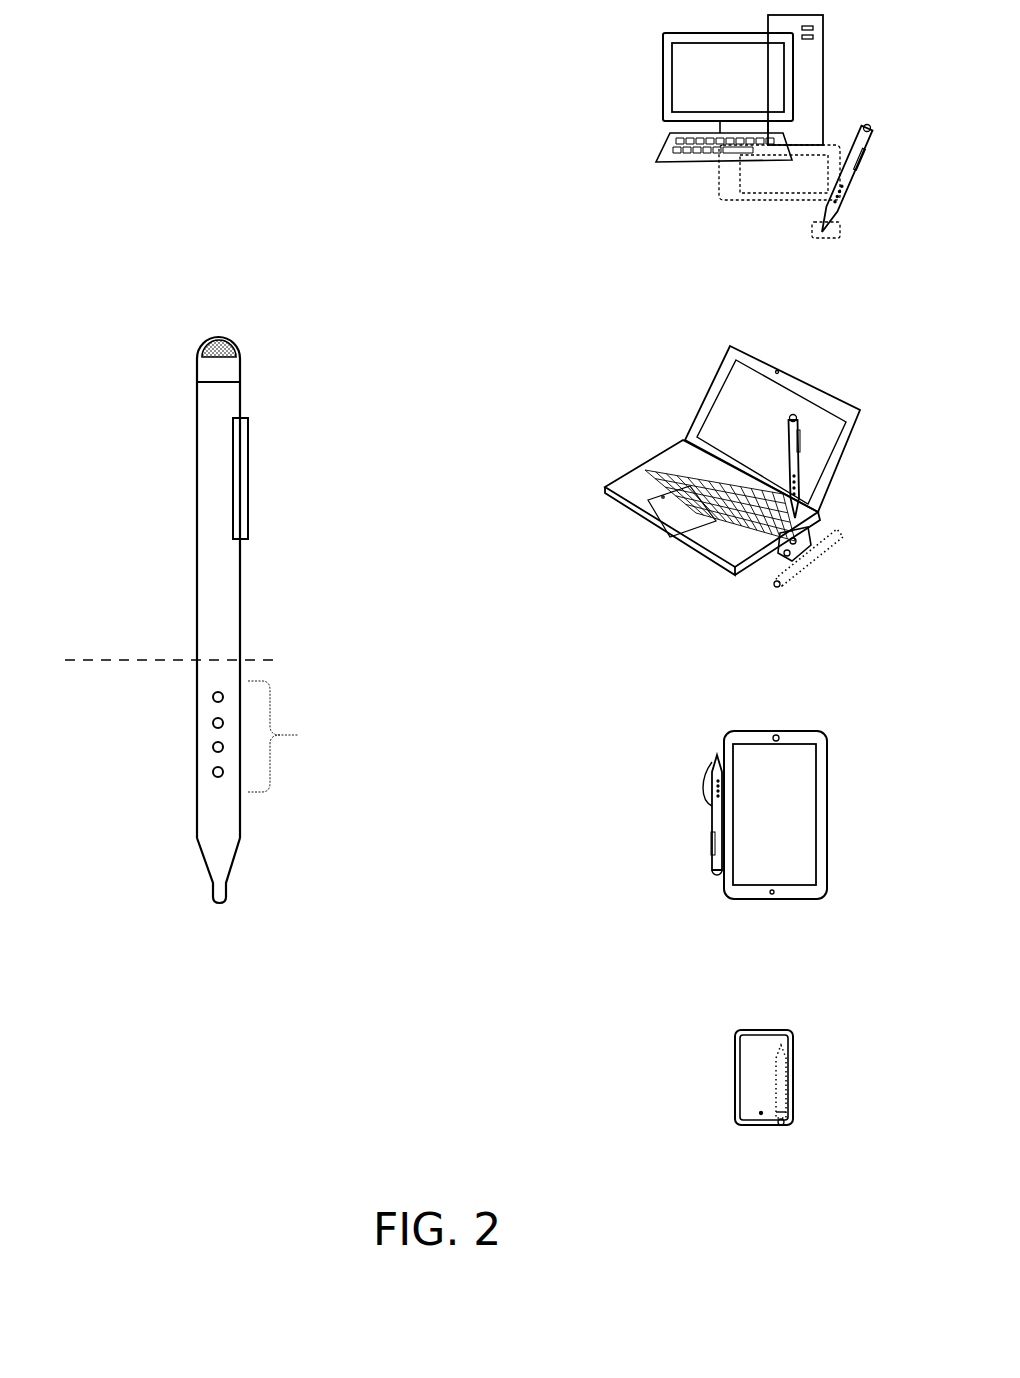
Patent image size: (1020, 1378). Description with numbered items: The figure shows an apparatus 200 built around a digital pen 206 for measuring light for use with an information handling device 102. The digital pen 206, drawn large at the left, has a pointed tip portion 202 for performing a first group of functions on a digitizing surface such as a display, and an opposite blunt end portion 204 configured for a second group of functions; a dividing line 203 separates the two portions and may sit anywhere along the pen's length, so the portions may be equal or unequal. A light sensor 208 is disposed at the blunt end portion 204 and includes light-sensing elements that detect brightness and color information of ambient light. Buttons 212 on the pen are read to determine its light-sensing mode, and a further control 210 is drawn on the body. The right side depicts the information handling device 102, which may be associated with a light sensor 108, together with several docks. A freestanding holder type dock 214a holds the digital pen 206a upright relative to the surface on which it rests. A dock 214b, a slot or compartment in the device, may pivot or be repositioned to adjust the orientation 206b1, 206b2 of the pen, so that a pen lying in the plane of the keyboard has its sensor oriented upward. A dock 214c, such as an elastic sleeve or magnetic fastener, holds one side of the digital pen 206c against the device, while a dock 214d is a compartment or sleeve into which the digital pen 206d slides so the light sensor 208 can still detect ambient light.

The apparatus 200 is at (96, 71).
The pointed tip portion 202 is at (146, 731).
The dividing line 203 is at (143, 660).
The blunt end portion 204 is at (128, 598).
The digital pen 206 is at (242, 594).
The light sensor 208 is at (240, 350).
The button 210 is at (252, 477).
The buttons 212 is at (292, 736).
The information handling device 102 is at (768, 30).
The light sensor 108 is at (740, 180).
The freestanding holder type dock 214a is at (812, 228).
The digital pen 206a is at (855, 172).
The orientation of the digital pen 206b1 is at (800, 463).
The orientation of the digital pen 206b2 is at (805, 573).
The dock 214b is at (810, 538).
The digital pen 206c is at (712, 820).
The dock 214c is at (710, 790).
The digital pen 206d is at (786, 1085).
The dock 214d is at (792, 1107).